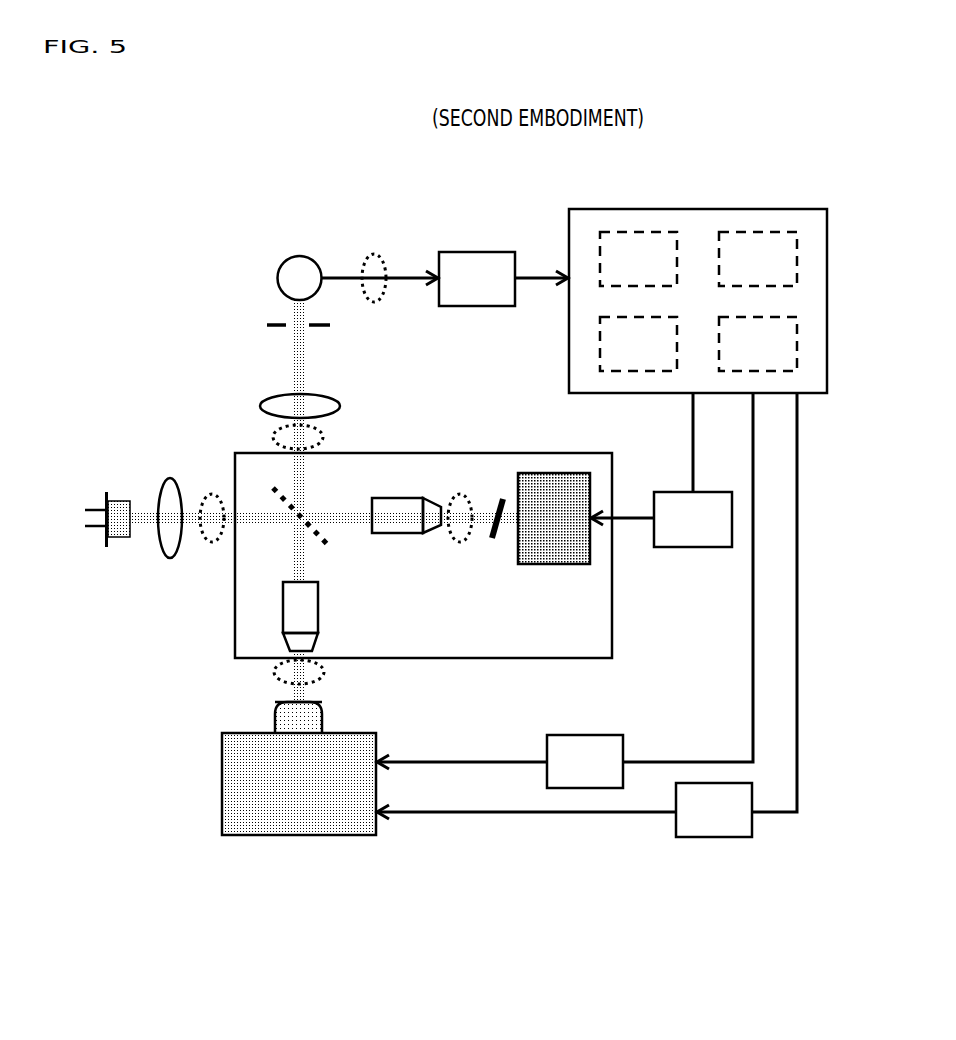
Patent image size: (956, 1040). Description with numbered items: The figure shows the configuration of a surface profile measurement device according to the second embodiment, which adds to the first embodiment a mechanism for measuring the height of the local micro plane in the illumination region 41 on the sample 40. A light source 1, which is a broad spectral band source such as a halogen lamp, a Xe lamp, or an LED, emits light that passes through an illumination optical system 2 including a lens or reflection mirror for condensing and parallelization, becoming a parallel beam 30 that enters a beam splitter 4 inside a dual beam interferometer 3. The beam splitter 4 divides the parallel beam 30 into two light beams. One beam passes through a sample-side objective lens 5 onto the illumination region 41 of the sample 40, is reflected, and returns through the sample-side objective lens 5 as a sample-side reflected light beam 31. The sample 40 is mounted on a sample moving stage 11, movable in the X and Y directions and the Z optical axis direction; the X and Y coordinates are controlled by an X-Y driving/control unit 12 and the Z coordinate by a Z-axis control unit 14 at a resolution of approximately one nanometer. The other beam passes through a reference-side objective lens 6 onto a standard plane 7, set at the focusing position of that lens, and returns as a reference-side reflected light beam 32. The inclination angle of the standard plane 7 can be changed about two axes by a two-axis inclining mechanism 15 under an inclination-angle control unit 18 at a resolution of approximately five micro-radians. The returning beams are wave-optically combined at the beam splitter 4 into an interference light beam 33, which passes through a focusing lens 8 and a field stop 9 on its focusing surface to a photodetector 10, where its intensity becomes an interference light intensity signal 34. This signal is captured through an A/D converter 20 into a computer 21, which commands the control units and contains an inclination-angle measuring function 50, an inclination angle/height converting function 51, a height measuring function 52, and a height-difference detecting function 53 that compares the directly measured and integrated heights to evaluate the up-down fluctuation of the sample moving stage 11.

The light source 1 is at (120, 500).
The illumination optical system 2 is at (170, 540).
The dual beam interferometer 3 is at (233, 600).
The beam splitter 4 is at (330, 548).
The sample-side objective lens 5 is at (310, 607).
The reference-side objective lens 6 is at (407, 528).
The standard plane 7 is at (493, 550).
The focusing lens 8 is at (272, 406).
The field stop 9 is at (258, 322).
The photodetector 10 is at (288, 270).
The sample moving stage 11 is at (235, 778).
The X-Y driving/control unit 12 is at (708, 827).
The Z-axis control unit 14 is at (578, 750).
The two-axis inclining mechanism 15 is at (558, 550).
The inclination-angle control unit 18 is at (697, 532).
The A/D converter 20 is at (460, 258).
The computer 21 is at (579, 227).
The parallel beam 30 is at (213, 492).
The sample-side reflected light beam 31 is at (277, 672).
The reference-side reflected light beam 32 is at (458, 492).
The interference light beam 33 is at (325, 430).
The interference light intensity signal 34 is at (373, 253).
The sample 40 is at (312, 718).
The illumination region 41 is at (293, 703).
The inclination-angle measuring function 50 is at (635, 237).
The inclination angle/height converting function 51 is at (612, 339).
The height measuring function 52 is at (742, 237).
The height-difference detecting function 53 is at (730, 358).